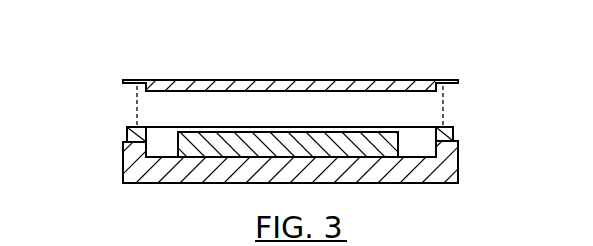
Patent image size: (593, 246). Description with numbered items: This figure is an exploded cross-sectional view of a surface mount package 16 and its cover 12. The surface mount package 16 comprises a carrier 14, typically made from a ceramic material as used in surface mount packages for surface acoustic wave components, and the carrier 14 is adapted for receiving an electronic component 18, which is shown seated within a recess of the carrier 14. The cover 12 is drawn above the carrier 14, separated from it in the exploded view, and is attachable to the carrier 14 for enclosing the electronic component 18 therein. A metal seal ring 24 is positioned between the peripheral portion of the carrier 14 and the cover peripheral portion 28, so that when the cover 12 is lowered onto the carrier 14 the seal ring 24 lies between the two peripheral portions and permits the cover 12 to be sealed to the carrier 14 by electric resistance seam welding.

The cover 12 is at (377, 82).
The carrier 14 is at (458, 150).
The surface mount package 16 is at (120, 100).
The electronic component 18 is at (398, 135).
The metal seal ring 24 is at (126, 132).
The cover peripheral portion 28 is at (446, 85).